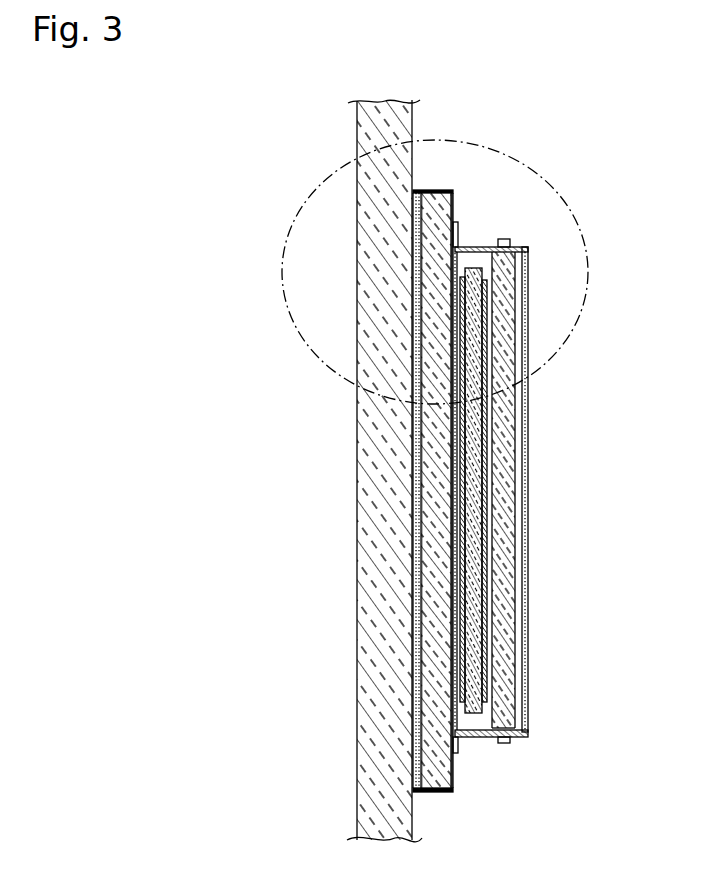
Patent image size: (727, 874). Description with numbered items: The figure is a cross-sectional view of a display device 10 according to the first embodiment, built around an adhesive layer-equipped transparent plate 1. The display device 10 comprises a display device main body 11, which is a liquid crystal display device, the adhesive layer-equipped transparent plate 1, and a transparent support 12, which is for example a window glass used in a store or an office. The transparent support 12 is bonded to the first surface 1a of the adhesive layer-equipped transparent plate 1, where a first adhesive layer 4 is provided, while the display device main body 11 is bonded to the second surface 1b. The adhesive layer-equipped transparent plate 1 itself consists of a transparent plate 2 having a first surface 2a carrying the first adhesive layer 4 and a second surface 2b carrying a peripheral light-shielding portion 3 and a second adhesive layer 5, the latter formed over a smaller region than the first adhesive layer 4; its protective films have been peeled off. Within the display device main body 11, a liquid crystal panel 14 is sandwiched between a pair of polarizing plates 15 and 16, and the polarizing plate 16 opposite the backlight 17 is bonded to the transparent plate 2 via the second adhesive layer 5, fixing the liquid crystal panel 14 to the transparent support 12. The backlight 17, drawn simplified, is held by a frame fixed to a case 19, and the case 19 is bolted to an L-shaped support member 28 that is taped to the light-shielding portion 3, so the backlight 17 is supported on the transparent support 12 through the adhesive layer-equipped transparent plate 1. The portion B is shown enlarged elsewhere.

The display device 10 is at (262, 211).
The display device main body 11 is at (566, 282).
The transparent support 12 is at (373, 436).
The adhesive layer-equipped transparent plate 1 is at (292, 472).
The first surface 1a is at (413, 362).
The second surface 1b is at (453, 346).
The transparent plate 2 is at (440, 636).
The first surface 2a is at (413, 760).
The second surface 2b is at (515, 638).
The light-shielding portion 3 is at (452, 192).
The first adhesive layer 4 is at (413, 714).
The second adhesive layer 5 is at (440, 506).
The liquid crystal panel 14 is at (489, 470).
The polarizing plate 15 is at (492, 527).
The polarizing plate 16 is at (483, 432).
The backlight 17 is at (503, 597).
The case 19 is at (527, 665).
The support member 28 is at (478, 247).
The portion B is at (563, 198).